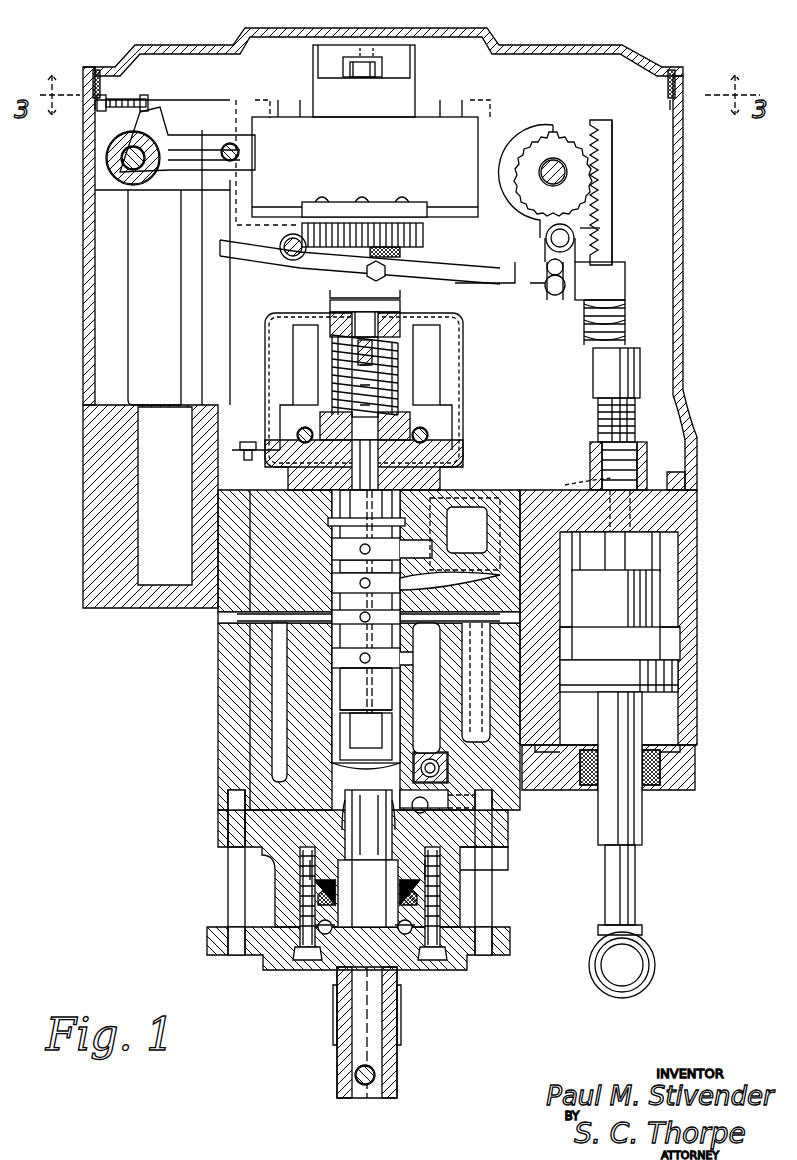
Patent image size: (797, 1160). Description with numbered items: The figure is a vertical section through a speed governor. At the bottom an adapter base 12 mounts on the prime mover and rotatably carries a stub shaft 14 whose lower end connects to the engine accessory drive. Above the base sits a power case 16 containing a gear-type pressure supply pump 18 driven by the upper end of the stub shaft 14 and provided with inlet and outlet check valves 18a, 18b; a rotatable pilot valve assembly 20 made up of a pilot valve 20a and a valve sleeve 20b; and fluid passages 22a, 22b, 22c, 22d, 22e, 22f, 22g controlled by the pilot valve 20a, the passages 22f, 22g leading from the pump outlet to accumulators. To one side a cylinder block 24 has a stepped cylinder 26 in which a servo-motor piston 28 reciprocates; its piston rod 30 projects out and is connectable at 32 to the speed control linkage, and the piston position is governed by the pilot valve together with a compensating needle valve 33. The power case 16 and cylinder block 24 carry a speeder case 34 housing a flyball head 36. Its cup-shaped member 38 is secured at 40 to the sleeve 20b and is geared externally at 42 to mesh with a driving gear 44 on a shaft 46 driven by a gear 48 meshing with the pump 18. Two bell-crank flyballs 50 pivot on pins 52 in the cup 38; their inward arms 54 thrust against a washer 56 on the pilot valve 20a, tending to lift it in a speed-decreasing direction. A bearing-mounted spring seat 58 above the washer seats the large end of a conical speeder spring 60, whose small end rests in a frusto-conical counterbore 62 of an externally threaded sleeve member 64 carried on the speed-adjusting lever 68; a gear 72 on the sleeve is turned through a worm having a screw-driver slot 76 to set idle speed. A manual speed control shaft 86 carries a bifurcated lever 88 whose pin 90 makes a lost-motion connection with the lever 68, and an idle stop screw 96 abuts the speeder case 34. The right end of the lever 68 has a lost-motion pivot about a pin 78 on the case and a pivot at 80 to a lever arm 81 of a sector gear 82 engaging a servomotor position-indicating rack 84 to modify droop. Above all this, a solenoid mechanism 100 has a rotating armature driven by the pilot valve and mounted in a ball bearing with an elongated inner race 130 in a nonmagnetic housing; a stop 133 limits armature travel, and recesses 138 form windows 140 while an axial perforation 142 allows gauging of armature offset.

The adapter base 12 is at (268, 867).
The stub shaft 14 is at (342, 967).
The power case 16 is at (218, 628).
The gear-type pressure supply pump 18 is at (345, 790).
The inlet check valve 18a is at (484, 858).
The outlet check valve 18b is at (450, 762).
The rotatable pilot valve assembly 20 is at (340, 580).
The pilot valve 20a is at (440, 460).
The valve sleeve 20b is at (340, 560).
The fluid passage 22a is at (400, 548).
The fluid passage 22b is at (388, 590).
The fluid passage 22c is at (392, 655).
The fluid passage 22d is at (392, 680).
The fluid passage 22e is at (290, 790).
The fluid passage 22f is at (520, 622).
The fluid passage 22g is at (270, 670).
The cylinder block 24 is at (692, 588).
The stepped cylinder 26 is at (680, 648).
The servo-motor piston 28 is at (675, 682).
The piston rod 30 is at (630, 810).
The linkage connection 32 is at (640, 972).
The compensating needle valve 33 is at (581, 487).
The speeder case 34 is at (88, 275).
The flyball head 36 is at (270, 373).
The cup-shaped member 38 is at (228, 455).
The securing point 40 is at (330, 530).
The external gearing 42 is at (345, 548).
The driving gear 44 is at (508, 490).
The shaft 46 is at (472, 692).
The gear 48 is at (500, 805).
The flyballs 50 is at (300, 345).
The pins 52 is at (430, 436).
The inwardly extending arms 54 is at (280, 448).
The washer 56 is at (408, 425).
The speeder spring seat 58 is at (325, 412).
The conical speeder spring 60 is at (400, 395).
The frusto-conical counterbore 62 is at (386, 322).
The externally threaded sleeve member 64 is at (332, 312).
The speed-adjusting lever 68 is at (512, 283).
The gear 72 is at (425, 232).
The screw-driver slot 76 is at (280, 247).
The pin 78 is at (553, 290).
The pivotal connection 80 is at (550, 238).
The lever arm 81 is at (598, 225).
The sector gear 82 is at (535, 158).
The servomotor position-indicating rack 84 is at (613, 140).
The speed control shaft 86 is at (120, 157).
The bifurcated lever 88 is at (170, 130).
The pin 90 is at (242, 154).
The idle stop screw 96 is at (118, 99).
The solenoid mechanism 100 is at (424, 126).
The elongated inner race 130 is at (362, 78).
The abutment or stop 133 is at (378, 55).
The recess 138 is at (325, 73).
The windows 140 is at (385, 62).
The axial perforation 142 is at (362, 50).